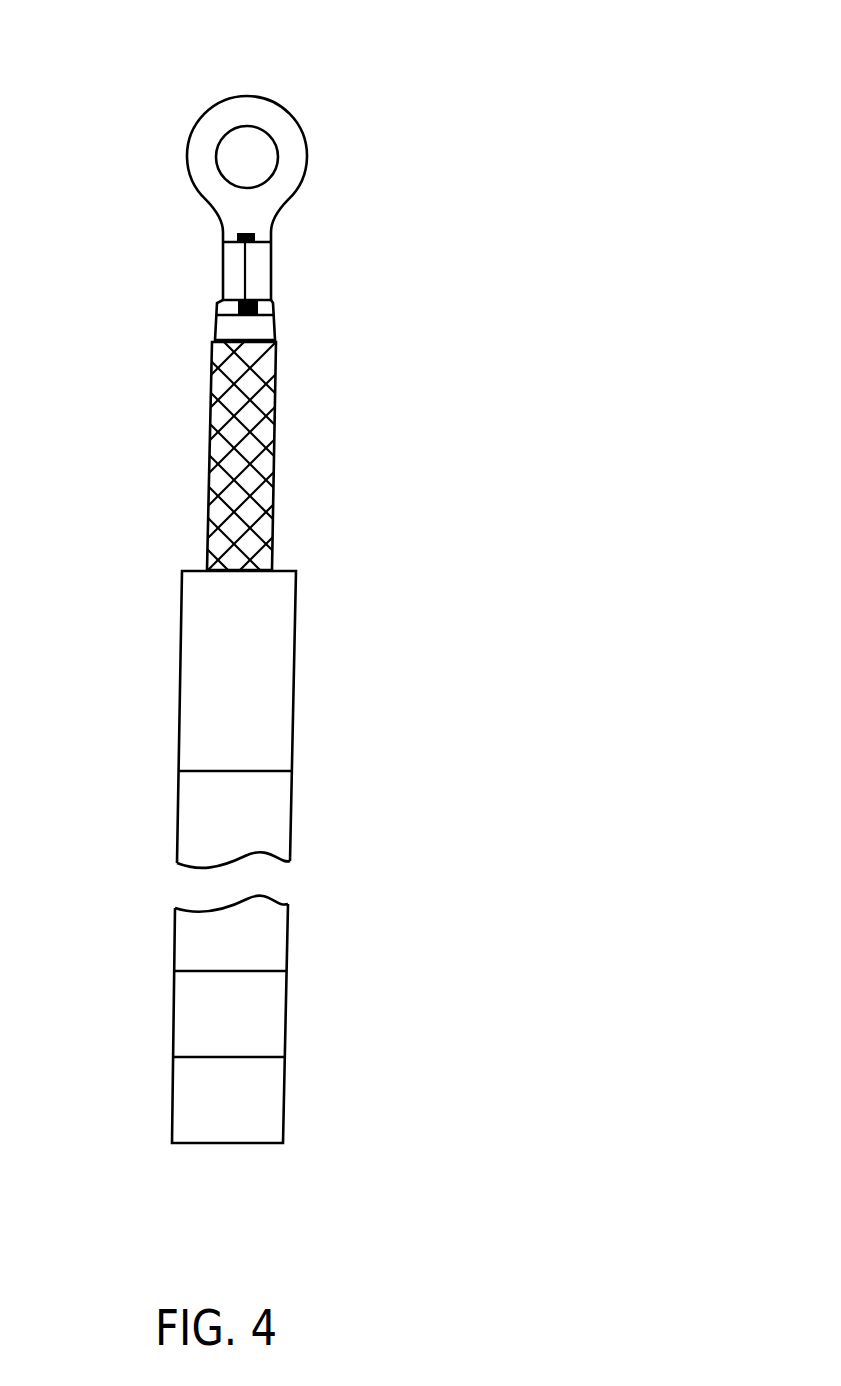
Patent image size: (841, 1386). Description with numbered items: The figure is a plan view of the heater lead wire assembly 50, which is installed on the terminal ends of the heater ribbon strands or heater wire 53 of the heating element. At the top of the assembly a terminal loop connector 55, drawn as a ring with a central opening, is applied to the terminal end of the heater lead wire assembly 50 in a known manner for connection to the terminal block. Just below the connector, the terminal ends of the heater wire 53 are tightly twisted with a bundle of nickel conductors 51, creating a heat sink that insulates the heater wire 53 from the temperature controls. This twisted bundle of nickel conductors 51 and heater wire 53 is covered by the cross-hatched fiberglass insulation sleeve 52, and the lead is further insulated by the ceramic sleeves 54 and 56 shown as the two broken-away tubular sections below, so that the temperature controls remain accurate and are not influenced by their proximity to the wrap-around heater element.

The heater lead wire assembly 50 is at (473, 62).
The bundle of nickel conductors 51 is at (225, 305).
The fiberglass insulation sleeve 52 is at (240, 553).
The heater wire 53 is at (260, 315).
The ceramic sleeve 54 is at (252, 797).
The terminal loop connector 55 is at (287, 187).
The ceramic sleeve 56 is at (247, 1028).